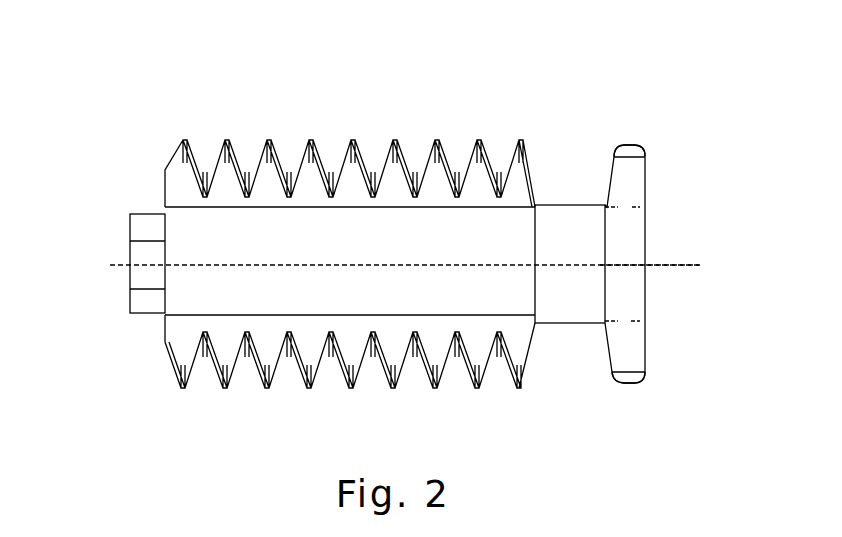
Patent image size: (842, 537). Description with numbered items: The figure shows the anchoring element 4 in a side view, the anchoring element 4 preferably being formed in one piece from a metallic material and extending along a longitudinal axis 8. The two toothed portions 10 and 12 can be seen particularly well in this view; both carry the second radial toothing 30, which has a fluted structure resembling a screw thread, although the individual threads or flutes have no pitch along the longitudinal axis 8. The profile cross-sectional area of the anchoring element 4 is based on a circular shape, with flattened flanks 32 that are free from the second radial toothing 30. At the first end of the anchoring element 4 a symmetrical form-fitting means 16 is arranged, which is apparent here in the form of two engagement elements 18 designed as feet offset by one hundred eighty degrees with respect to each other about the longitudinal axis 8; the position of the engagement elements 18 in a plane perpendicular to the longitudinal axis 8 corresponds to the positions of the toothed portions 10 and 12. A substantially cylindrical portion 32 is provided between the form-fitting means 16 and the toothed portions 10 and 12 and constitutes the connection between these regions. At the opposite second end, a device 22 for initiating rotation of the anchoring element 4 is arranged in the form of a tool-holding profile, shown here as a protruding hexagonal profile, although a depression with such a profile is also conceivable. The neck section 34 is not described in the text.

The anchoring element 4 is at (506, 92).
The longitudinal axis 8 is at (700, 265).
The toothed portion 10 is at (341, 208).
The toothed portion 12 is at (338, 314).
The form-fitting means 16 is at (627, 241).
The engagement element 18 is at (626, 191).
The device for initiating rotation 22 is at (143, 300).
The second radial toothing 30 is at (283, 142).
The flattened flank / cylindrical portion 32 is at (405, 254).
The shaft section 34 is at (557, 216).